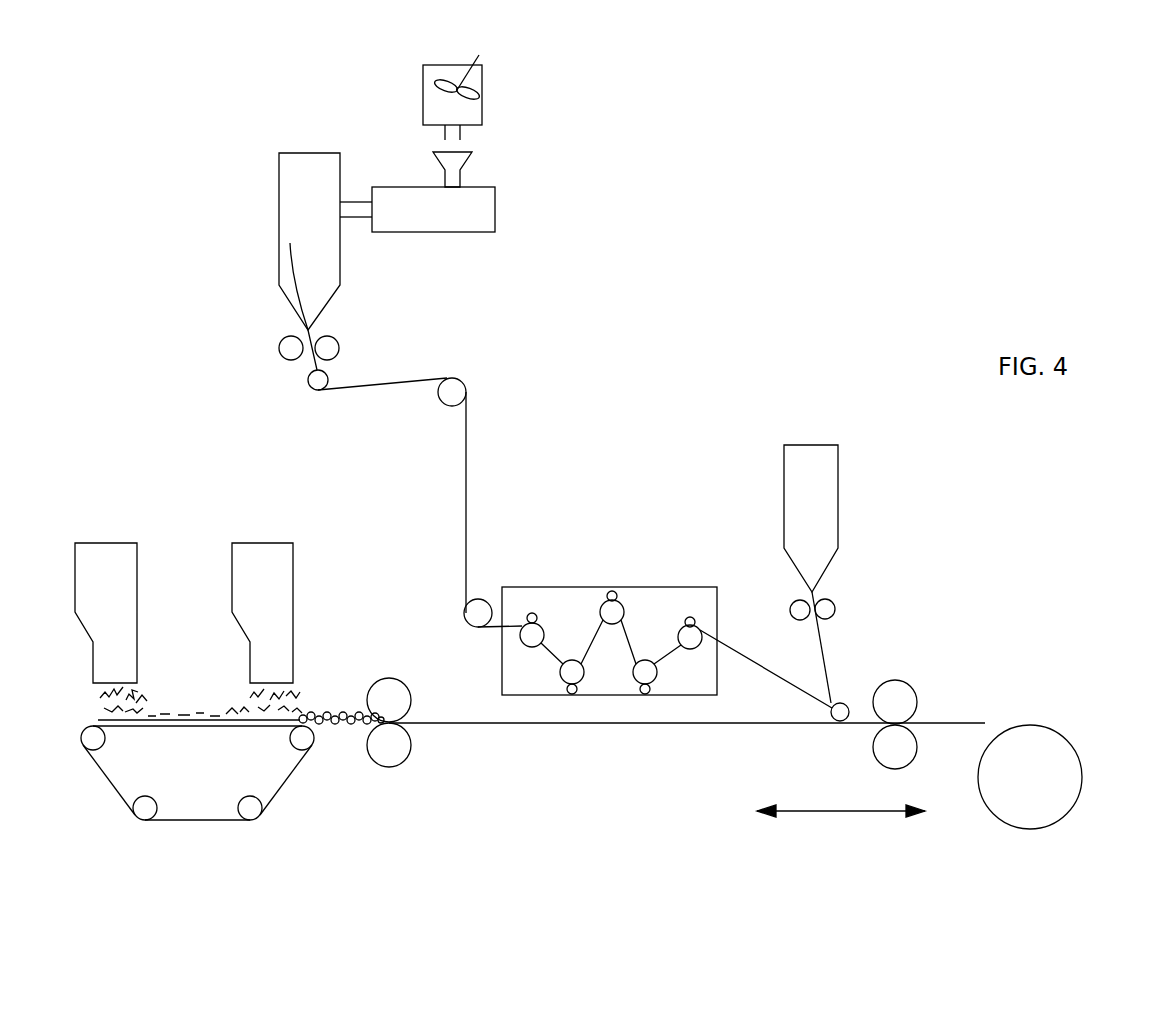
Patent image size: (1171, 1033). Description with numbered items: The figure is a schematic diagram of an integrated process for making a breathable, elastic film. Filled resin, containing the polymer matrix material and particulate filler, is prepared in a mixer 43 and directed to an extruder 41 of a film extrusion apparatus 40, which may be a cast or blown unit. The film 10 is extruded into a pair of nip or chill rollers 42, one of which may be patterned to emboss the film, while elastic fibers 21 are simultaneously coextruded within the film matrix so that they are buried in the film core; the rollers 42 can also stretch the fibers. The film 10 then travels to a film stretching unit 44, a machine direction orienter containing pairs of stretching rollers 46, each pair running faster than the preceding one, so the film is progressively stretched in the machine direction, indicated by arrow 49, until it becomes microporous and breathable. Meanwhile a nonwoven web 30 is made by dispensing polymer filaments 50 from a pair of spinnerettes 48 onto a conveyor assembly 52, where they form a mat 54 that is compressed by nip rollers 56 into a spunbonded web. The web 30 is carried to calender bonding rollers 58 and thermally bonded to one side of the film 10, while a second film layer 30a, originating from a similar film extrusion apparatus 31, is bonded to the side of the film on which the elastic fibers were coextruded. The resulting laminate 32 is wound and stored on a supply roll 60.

The film 10 is at (388, 383).
The elastic fibers 21 is at (293, 255).
The nonwoven web 30 is at (500, 723).
The second film layer 30a is at (820, 647).
The film extrusion apparatus 31 is at (812, 447).
The laminate 32 is at (985, 723).
The film extrusion apparatus 40 is at (307, 178).
The extruder 41 is at (487, 213).
The nip or chill rollers 42 is at (279, 348).
The mixer 43 is at (476, 108).
The film stretching unit 44 is at (640, 580).
The stretching rollers 46 is at (528, 613).
The spinnerettes 48 is at (102, 543).
The arrow 49 is at (847, 811).
The polymer filaments 50 is at (253, 713).
The conveyor assembly 52 is at (233, 820).
The mat 54 is at (343, 712).
The nip rollers 56 is at (397, 676).
The calender bonding rollers 58 is at (913, 690).
The supply roll 60 is at (1082, 757).